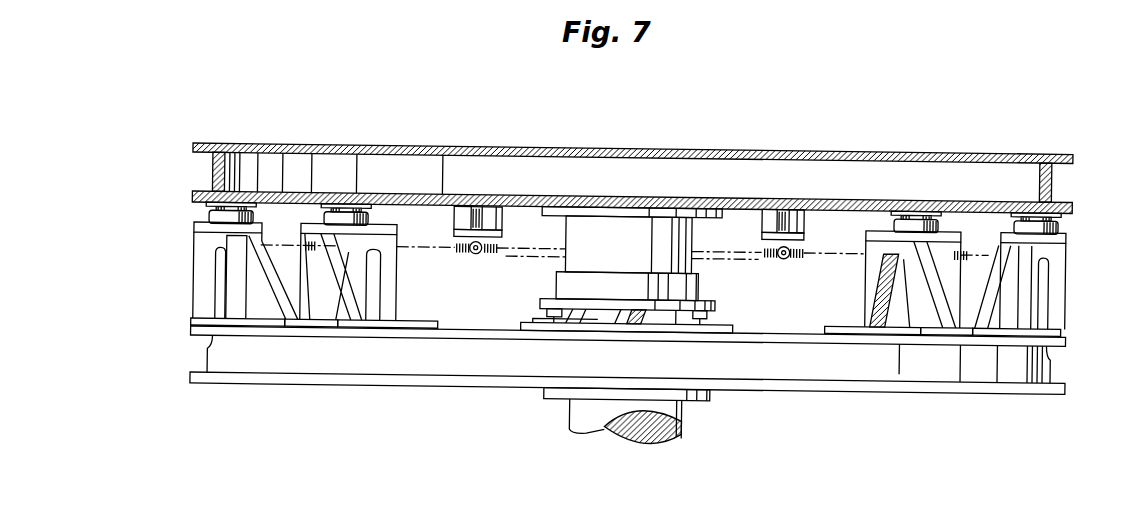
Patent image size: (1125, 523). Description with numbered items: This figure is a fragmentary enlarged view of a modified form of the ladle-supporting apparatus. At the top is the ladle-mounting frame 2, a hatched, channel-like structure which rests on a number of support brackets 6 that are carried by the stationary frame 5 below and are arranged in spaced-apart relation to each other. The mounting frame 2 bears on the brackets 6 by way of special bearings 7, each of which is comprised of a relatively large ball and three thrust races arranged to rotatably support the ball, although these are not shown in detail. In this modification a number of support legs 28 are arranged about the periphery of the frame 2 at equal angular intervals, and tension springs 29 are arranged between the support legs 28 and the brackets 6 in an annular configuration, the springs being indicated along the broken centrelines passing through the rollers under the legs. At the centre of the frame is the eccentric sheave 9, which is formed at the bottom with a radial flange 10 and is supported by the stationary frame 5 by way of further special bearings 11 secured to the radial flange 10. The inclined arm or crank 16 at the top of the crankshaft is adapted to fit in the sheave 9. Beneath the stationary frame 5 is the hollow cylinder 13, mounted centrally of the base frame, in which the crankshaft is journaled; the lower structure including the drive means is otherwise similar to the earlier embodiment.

The mounting frame 2 is at (1053, 190).
The stationary frame 5 is at (1047, 375).
The support brackets 6 is at (196, 285).
The special bearings 7 is at (212, 214).
The eccentric sheave 9 is at (565, 279).
The radial flange 10 is at (542, 303).
The special bearings 11 is at (552, 321).
The hollow cylinder 13 is at (685, 422).
The inclined arm or crank 16 is at (632, 322).
The support legs 28 is at (505, 228).
The tension springs 29 is at (512, 258).